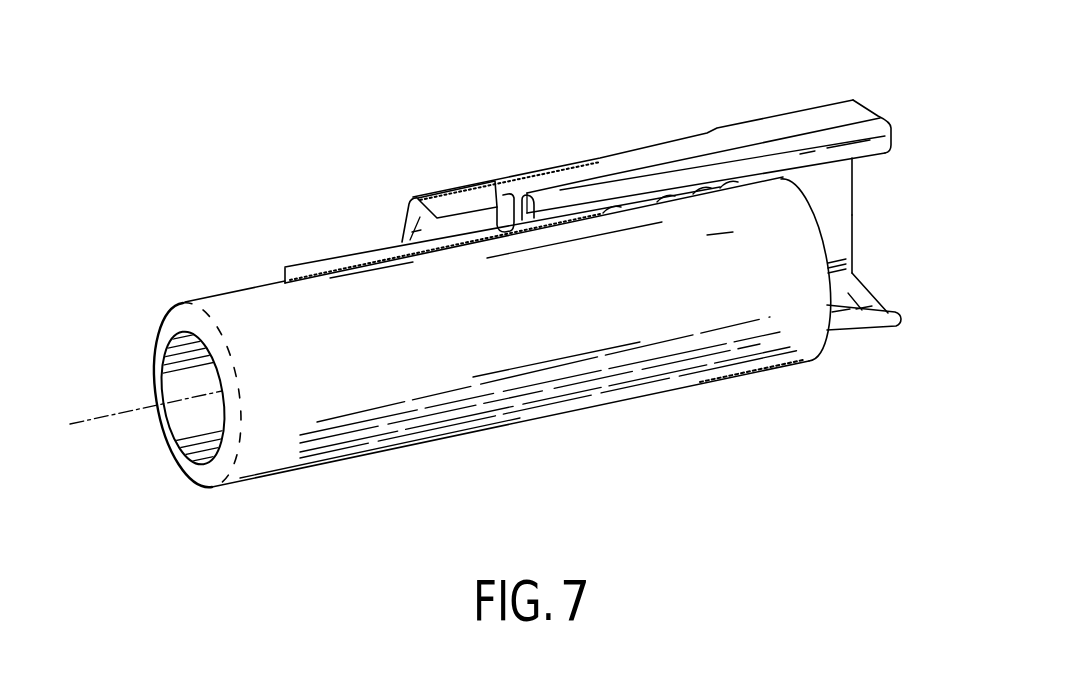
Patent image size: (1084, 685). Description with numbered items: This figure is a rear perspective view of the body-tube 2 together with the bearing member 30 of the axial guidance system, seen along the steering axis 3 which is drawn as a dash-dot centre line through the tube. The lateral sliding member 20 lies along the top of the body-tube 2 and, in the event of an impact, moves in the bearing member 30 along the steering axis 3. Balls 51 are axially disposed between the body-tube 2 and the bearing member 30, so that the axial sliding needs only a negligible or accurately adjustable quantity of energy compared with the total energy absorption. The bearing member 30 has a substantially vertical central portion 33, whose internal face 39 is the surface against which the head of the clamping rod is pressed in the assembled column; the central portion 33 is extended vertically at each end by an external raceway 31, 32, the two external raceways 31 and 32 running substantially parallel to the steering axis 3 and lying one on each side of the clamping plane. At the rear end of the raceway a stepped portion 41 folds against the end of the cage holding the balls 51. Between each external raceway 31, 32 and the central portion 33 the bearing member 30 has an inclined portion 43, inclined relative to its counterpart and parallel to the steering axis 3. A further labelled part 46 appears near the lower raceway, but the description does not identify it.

The body-tube 2 is at (586, 382).
The steering axis 3 is at (92, 422).
The lateral sliding member 20 is at (320, 262).
The bearing member 30 is at (758, 118).
The external raceway 31 is at (860, 155).
The external raceway 32 is at (863, 311).
The central portion 33 is at (853, 182).
The internal face 39 is at (835, 218).
The stepped portion 41 is at (513, 210).
The inclined portion 43 is at (404, 236).
The strut 46 is at (846, 294).
The balls 51 is at (727, 180).